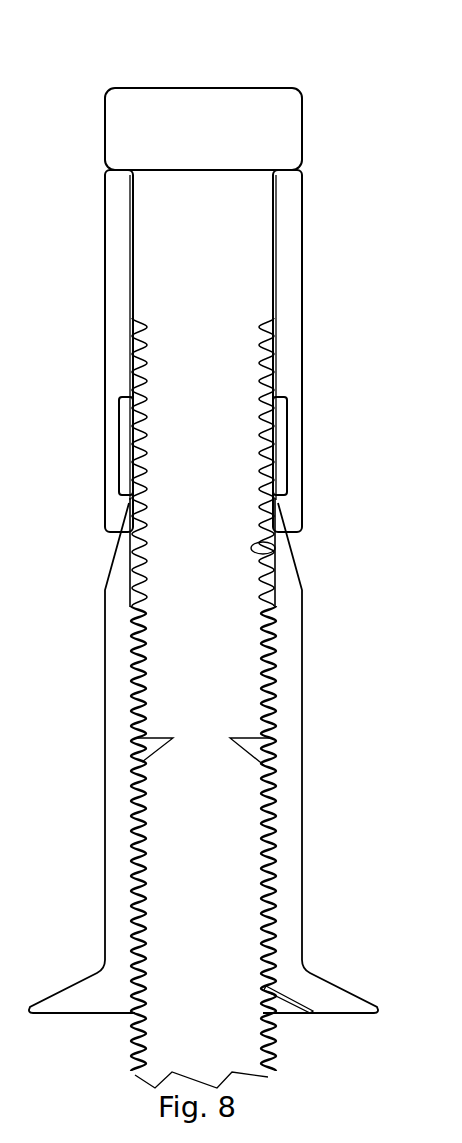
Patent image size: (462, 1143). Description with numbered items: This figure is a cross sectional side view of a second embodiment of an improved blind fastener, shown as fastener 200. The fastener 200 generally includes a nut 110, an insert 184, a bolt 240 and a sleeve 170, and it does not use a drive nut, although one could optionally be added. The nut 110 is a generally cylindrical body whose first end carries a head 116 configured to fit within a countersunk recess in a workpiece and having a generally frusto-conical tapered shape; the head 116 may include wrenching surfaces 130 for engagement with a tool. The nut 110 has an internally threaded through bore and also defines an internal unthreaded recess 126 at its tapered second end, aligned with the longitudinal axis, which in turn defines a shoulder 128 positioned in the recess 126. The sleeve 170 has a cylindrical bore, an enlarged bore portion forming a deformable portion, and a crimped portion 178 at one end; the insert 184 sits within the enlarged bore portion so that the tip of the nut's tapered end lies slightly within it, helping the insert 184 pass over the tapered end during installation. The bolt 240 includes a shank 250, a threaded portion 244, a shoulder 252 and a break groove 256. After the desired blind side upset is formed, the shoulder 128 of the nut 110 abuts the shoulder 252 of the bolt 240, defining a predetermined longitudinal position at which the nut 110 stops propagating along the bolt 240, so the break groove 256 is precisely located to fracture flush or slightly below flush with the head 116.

The fastener 200 is at (258, 50).
The bolt 240 is at (283, 130).
The shank 250 is at (130, 258).
The sleeve 170 is at (302, 222).
The shoulder 252 is at (275, 328).
The insert 184 is at (280, 418).
The shoulder 128 is at (276, 602).
The internal unthreaded recess 126 is at (275, 558).
The nut 110 is at (290, 917).
The head 116 is at (320, 995).
The wrenching surfaces 130 is at (275, 1005).
The threaded portion 244 is at (268, 657).
The break groove 256 is at (142, 748).
The crimped portion 178 is at (448, 168).